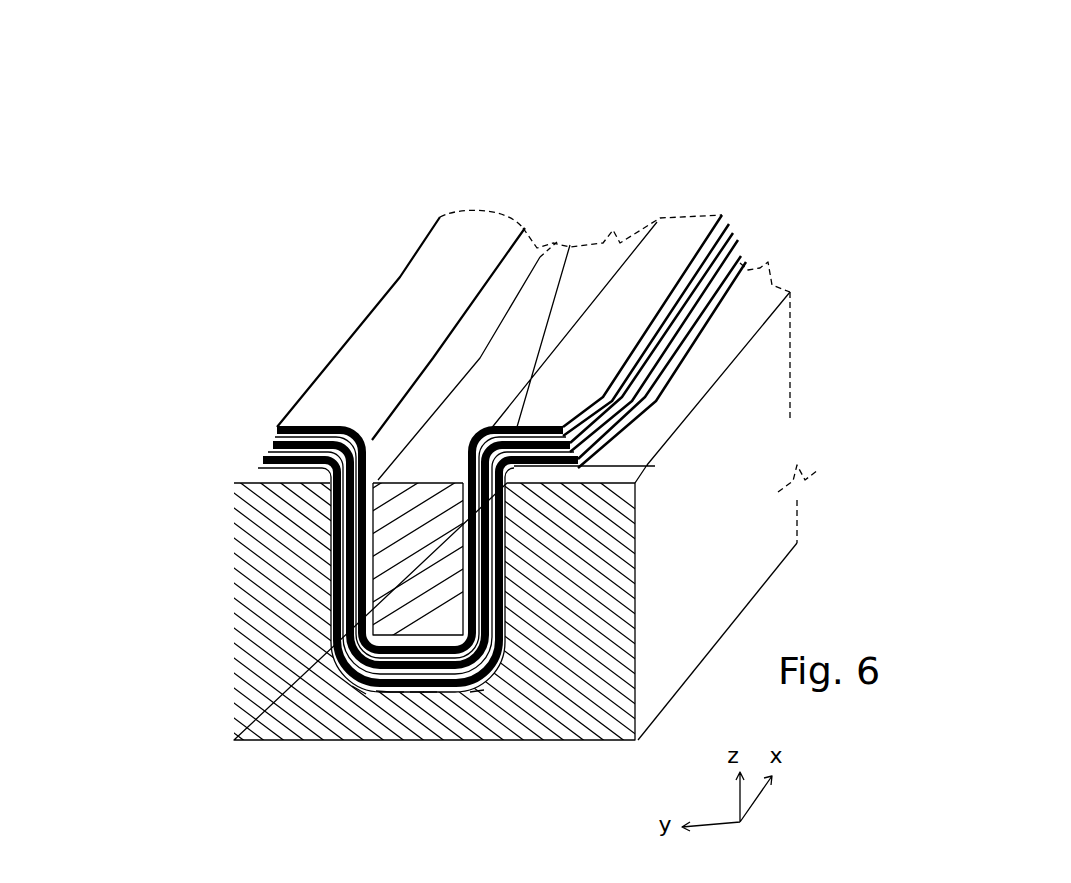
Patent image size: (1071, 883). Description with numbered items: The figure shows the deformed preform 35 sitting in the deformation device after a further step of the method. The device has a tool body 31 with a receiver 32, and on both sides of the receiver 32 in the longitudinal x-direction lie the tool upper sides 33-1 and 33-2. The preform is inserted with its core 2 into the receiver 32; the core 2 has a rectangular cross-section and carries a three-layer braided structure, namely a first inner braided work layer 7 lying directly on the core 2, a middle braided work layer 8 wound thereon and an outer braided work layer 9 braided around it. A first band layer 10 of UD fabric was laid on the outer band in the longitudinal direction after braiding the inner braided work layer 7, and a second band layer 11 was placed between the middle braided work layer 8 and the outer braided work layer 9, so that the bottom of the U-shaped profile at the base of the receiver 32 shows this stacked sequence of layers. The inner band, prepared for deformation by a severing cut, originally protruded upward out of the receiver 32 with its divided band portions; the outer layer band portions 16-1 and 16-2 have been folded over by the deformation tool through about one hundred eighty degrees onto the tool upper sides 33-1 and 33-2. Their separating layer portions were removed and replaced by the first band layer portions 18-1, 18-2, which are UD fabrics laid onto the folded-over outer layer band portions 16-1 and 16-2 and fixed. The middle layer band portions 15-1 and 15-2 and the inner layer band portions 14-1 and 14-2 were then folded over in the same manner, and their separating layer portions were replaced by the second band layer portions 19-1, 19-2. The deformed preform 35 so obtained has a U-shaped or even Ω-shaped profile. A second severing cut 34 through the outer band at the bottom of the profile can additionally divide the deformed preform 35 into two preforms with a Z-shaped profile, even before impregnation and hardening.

The deformed preform 35 is at (415, 166).
The tool body 31 is at (234, 630).
The receiver 32 is at (336, 665).
The core 2 is at (408, 553).
The tool upper side 33-1 is at (257, 472).
The tool upper side 33-2 is at (712, 340).
The outer layer band portion 16-1 is at (260, 464).
The outer layer band portion 16-2 is at (655, 464).
The first band layer portion 18-1 is at (266, 452).
The first band layer portion 18-2 is at (603, 420).
The middle layer band portion 15-1 is at (281, 432).
The middle layer band portion 15-2 is at (558, 405).
The second band layer portion 19-1 is at (308, 423).
The second band layer portion 19-2 is at (584, 333).
The inner layer band portion 14-1 is at (365, 355).
The inner layer band portion 14-2 is at (568, 272).
The inner braided work layer 7 is at (477, 693).
The middle braided work layer 8 is at (397, 694).
The outer braided work layer 9 is at (360, 690).
The first band layer 10 is at (430, 695).
The second band layer 11 is at (383, 690).
The second severing cut 34 is at (417, 693).